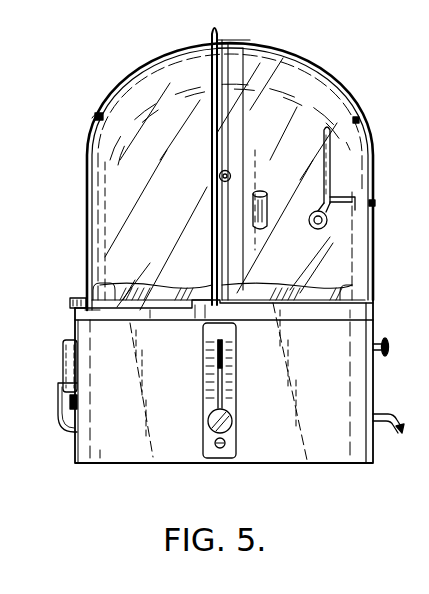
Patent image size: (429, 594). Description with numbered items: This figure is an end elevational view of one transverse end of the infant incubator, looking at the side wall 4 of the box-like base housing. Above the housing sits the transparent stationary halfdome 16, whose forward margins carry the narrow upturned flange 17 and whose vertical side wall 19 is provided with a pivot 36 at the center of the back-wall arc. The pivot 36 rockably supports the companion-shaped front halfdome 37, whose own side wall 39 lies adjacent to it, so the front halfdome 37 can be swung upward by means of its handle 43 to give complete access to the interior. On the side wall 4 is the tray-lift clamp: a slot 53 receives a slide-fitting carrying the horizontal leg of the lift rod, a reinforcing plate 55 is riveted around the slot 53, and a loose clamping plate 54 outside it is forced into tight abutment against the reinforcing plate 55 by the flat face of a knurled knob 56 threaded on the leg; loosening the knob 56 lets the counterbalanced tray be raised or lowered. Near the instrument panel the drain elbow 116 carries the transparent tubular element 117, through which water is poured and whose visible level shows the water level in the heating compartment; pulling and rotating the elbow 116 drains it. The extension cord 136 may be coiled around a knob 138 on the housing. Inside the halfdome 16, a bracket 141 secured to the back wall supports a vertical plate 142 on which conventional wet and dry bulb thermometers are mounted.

The side wall 4 is at (121, 449).
The stationary halfdome 16 is at (326, 68).
The upturned flange 17 is at (212, 28).
The side wall 19 is at (345, 258).
The pivot 36 is at (219, 176).
The front halfdome 37 is at (118, 86).
The side wall 39 is at (112, 208).
The handle 43 is at (76, 298).
The slot 53 is at (236, 384).
The clamping plate 54 is at (227, 445).
The reinforcing plate 55 is at (233, 335).
The knurled knob 56 is at (208, 425).
The elbow 116 is at (60, 425).
The tubular element 117 is at (63, 362).
The extension cord 136 is at (378, 413).
The knob 138 is at (382, 338).
The bracket 141 is at (343, 190).
The vertical plate 142 is at (345, 136).